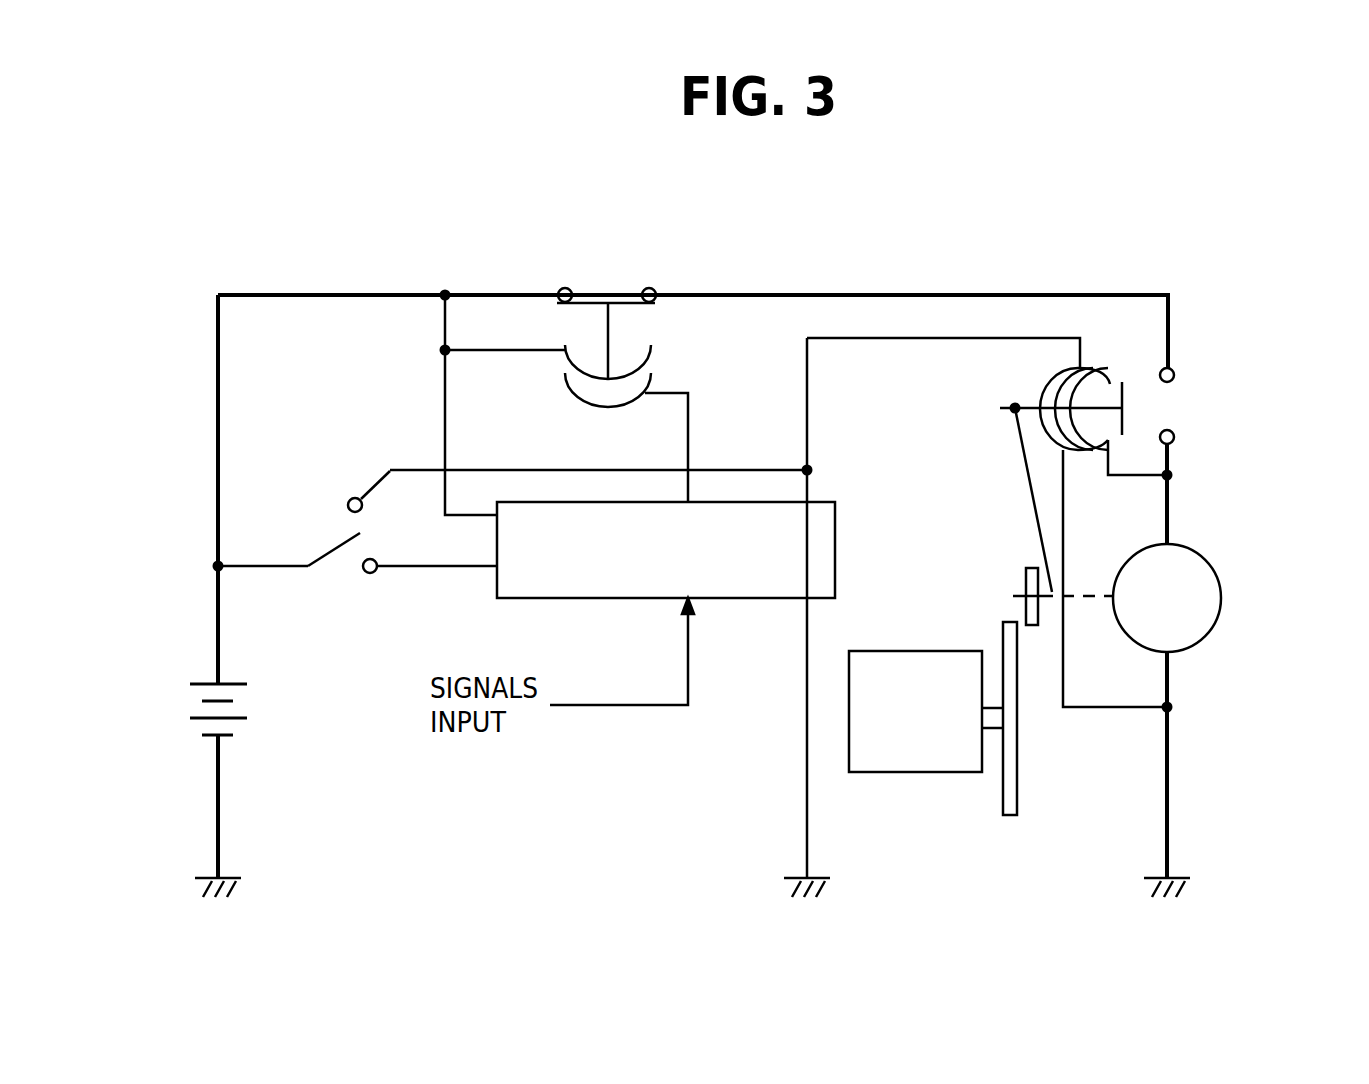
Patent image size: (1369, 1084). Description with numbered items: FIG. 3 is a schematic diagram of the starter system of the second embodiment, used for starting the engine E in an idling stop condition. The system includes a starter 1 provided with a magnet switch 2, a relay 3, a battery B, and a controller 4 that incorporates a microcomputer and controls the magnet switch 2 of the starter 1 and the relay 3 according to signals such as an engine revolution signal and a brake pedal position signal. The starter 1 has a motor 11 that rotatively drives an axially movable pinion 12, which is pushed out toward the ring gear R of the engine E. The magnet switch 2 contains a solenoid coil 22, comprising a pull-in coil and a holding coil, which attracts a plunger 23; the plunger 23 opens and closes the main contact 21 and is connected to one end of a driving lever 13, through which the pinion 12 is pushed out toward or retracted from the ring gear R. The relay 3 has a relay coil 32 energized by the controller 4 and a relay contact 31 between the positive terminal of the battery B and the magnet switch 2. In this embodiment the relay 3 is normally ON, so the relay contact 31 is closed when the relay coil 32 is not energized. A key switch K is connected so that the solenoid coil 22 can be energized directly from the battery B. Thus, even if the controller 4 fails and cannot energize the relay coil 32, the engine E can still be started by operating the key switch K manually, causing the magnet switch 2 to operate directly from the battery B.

The starter 1 is at (1185, 313).
The magnet switch 2 is at (1125, 348).
The relay 3 is at (637, 345).
The controller 4 is at (768, 600).
The motor 11 is at (1212, 630).
The pinion 12 is at (1026, 580).
The driving lever 13 is at (1030, 500).
The main contact 21 is at (1162, 398).
The solenoid coil 22 is at (1075, 367).
The plunger 23 is at (1025, 432).
The relay contact 31 is at (612, 307).
The relay coil 32 is at (652, 357).
The battery B is at (253, 703).
The key switch K is at (332, 549).
The engine E is at (912, 773).
The ring gear R is at (1003, 797).